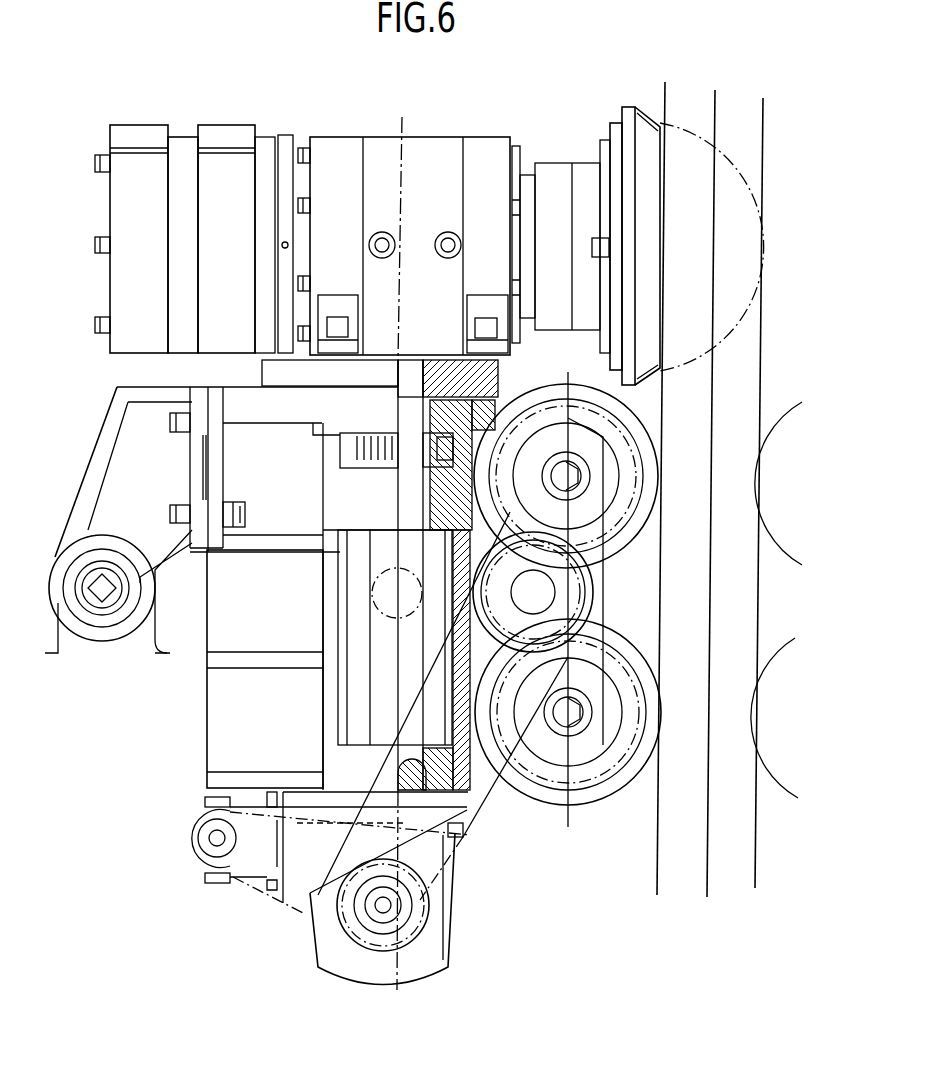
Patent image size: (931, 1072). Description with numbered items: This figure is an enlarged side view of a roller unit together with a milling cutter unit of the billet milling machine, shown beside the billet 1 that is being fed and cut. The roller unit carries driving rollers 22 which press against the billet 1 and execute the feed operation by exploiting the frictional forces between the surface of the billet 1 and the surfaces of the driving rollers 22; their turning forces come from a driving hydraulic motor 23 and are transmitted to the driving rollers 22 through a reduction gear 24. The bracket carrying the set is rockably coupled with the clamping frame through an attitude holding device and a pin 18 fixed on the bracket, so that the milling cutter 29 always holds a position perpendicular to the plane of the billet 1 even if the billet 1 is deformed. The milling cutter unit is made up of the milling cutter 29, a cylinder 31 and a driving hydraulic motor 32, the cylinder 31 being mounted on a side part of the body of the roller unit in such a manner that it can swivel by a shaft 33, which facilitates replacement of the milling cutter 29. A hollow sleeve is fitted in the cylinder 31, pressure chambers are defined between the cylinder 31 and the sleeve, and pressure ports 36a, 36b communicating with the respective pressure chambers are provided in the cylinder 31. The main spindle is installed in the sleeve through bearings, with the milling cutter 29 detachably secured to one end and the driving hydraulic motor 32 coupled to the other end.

The billet 1 is at (740, 122).
The pin 18 is at (388, 707).
The driving roller 22 is at (578, 806).
The driving hydraulic motor 23 is at (197, 870).
The reduction gear 24 is at (440, 935).
The milling cutter 29 is at (638, 138).
The cylinder 31 is at (344, 140).
The driving hydraulic motor 32 is at (183, 136).
The shaft 33 is at (412, 377).
The pressure port 36a is at (383, 231).
The pressure port 36b is at (448, 231).